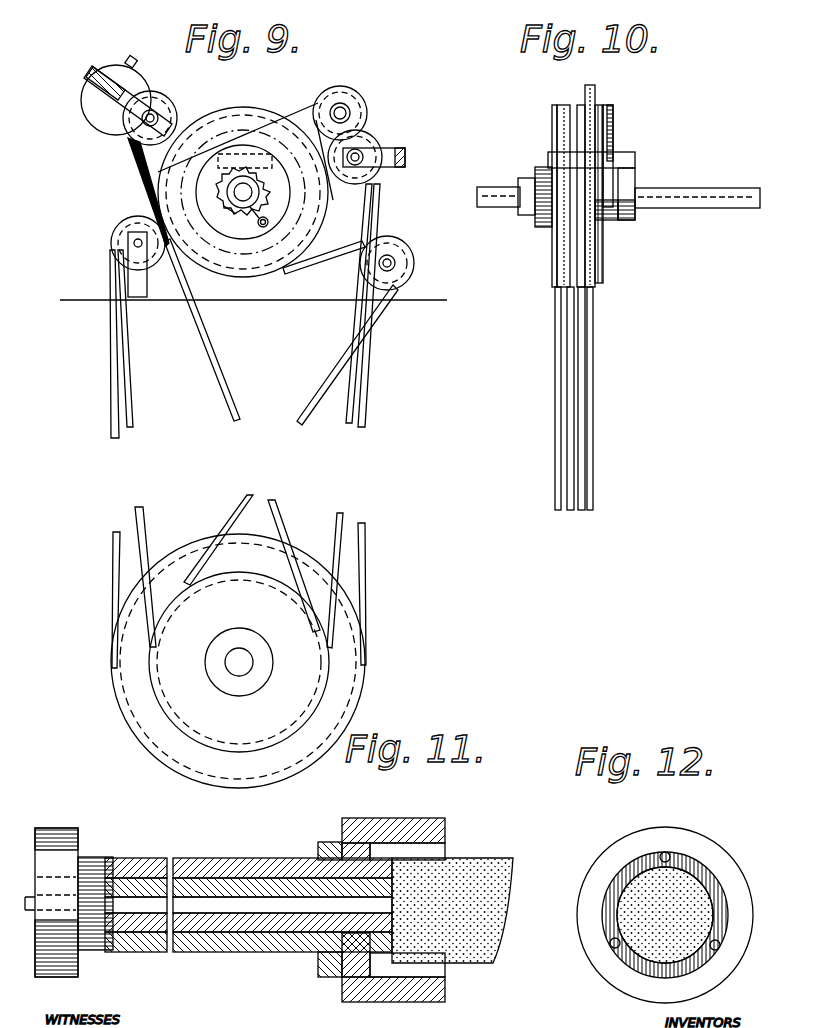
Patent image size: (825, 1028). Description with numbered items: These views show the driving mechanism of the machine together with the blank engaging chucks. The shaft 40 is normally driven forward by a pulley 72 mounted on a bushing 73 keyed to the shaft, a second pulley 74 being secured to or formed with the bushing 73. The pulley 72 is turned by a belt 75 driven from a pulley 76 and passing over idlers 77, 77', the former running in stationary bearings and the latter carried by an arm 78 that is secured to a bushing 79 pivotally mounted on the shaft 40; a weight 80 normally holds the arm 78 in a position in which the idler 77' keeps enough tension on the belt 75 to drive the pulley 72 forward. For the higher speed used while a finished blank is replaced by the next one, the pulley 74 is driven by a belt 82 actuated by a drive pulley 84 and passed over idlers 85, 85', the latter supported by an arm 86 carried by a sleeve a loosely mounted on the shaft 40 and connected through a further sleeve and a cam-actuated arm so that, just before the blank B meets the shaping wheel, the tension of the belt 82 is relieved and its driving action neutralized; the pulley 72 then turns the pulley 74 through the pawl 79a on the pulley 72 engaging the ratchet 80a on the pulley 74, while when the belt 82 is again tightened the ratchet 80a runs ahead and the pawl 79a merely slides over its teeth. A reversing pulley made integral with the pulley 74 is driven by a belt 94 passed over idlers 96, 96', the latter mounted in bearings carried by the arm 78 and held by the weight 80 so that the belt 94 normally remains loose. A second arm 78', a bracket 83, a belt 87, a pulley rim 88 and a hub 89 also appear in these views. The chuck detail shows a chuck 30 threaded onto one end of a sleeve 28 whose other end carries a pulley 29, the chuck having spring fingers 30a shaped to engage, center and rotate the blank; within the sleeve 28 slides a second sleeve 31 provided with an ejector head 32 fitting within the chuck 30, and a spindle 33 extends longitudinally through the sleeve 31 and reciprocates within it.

In FIG. 9, the shaft 40 is at (243, 192).
In FIG. 10, the shaft 40 is at (714, 190).
In FIG. 9, the pulley 72 is at (255, 108).
In FIG. 10, the pulley 72 is at (551, 265).
In FIG. 9, the bushing 73 is at (243, 200).
In FIG. 10, the second pulley 74 is at (600, 270).
In FIG. 9, the belt 75 is at (383, 197).
In FIG. 10, the belt 75 is at (554, 410).
In FIG. 9, the pulley 76 is at (239, 645).
In FIG. 9, the idler 77 is at (121, 253).
In FIG. 9, the idler 77' is at (378, 149).
In FIG. 10, the idler 77' is at (556, 194).
In FIG. 9, the arm 78 is at (262, 118).
In FIG. 10, the arm 78 is at (609, 144).
In FIG. 10, the arm 78' is at (635, 129).
In FIG. 10, the bushing 79 is at (636, 208).
In FIG. 9, the pawl 79a is at (275, 230).
In FIG. 10, the pawl 79a is at (536, 225).
In FIG. 9, the weight 80 is at (95, 108).
In FIG. 9, the ratchet 80a is at (233, 209).
In FIG. 9, the belt 82 is at (367, 395).
In FIG. 10, the belt 82 is at (590, 400).
In FIG. 10, the bracket 83 is at (636, 172).
In FIG. 9, the drive pulley 84 is at (342, 662).
In FIG. 9, the idler 85 is at (253, 276).
In FIG. 9, the idler 85' is at (363, 110).
In FIG. 10, the idler 85' is at (614, 181).
In FIG. 9, the arm 86 is at (314, 100).
In FIG. 9, the belt 87 is at (228, 394).
In FIG. 9, the pulley rim 88 is at (274, 578).
In FIG. 10, the hub 89 is at (564, 290).
In FIG. 9, the belt 94 is at (272, 503).
In FIG. 10, the belt 94 is at (594, 445).
In FIG. 9, the idler 96 is at (411, 263).
In FIG. 9, the idler 96' is at (158, 104).
In FIG. 10, the sleeve a is at (615, 207).
In FIG. 11, the sleeve 28 is at (255, 862).
In FIG. 11, the pulley 29 is at (80, 846).
In FIG. 11, the chuck 30 is at (447, 832).
In FIG. 12, the chuck 30 is at (708, 850).
In FIG. 11, the spring fingers 30a is at (390, 850).
In FIG. 12, the spring fingers 30a is at (668, 852).
In FIG. 11, the second sleeve 31 is at (258, 942).
In FIG. 11, the ejector head 32 is at (378, 966).
In FIG. 11, the spindle 33 is at (200, 905).
In FIG. 11, the blank B is at (500, 912).
In FIG. 12, the blank B is at (622, 906).